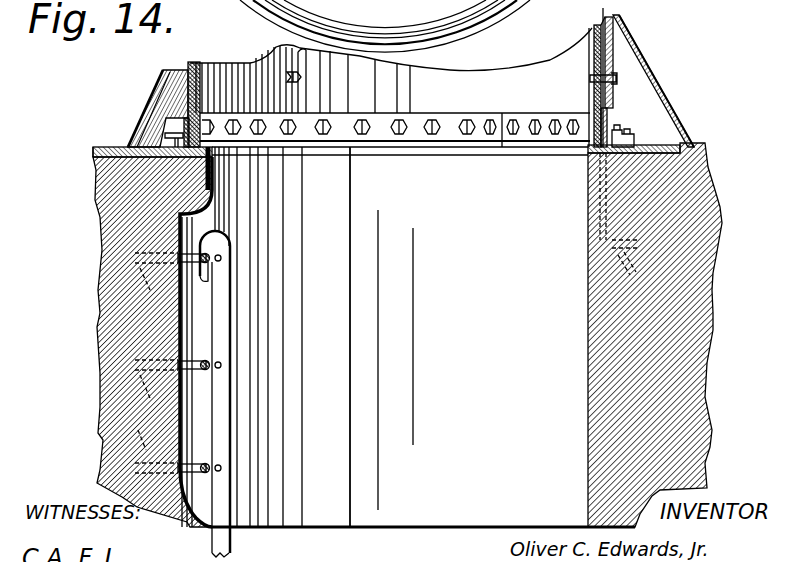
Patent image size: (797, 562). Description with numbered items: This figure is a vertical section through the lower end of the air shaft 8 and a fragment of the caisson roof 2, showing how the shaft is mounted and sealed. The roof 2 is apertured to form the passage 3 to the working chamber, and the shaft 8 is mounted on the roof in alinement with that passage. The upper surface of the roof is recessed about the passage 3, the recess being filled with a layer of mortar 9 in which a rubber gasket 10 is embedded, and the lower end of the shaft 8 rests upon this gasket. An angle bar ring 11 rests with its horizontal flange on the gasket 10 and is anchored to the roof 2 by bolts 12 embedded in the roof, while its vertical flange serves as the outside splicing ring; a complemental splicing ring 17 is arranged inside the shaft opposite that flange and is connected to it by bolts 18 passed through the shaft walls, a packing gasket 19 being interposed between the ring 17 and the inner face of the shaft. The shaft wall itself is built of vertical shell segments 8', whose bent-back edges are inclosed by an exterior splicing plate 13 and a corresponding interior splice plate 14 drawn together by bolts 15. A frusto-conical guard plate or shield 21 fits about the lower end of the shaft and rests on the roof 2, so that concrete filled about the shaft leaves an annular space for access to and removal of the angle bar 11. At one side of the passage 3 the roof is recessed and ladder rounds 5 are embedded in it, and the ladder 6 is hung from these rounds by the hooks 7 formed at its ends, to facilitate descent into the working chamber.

The roof 2 is at (100, 216).
The passage 3 is at (405, 515).
The ladder rounds 5 is at (210, 257).
The ladder 6 is at (218, 312).
The hooks 7 is at (205, 276).
The air shaft 8 is at (391, 87).
The shell segments 8' is at (626, 28).
The layer of mortar 9 is at (680, 146).
The gasket 10 is at (578, 207).
The angle bar ring 11 is at (182, 127).
The bolts 12 is at (210, 172).
The splicing plate 13 is at (614, 62).
The splice plate 14 is at (594, 30).
The bolts 15 is at (301, 77).
The splicing ring 17 is at (450, 125).
The bolts 18 is at (428, 126).
The packing gasket 19 is at (597, 162).
The guard plate or shield 21 is at (642, 100).